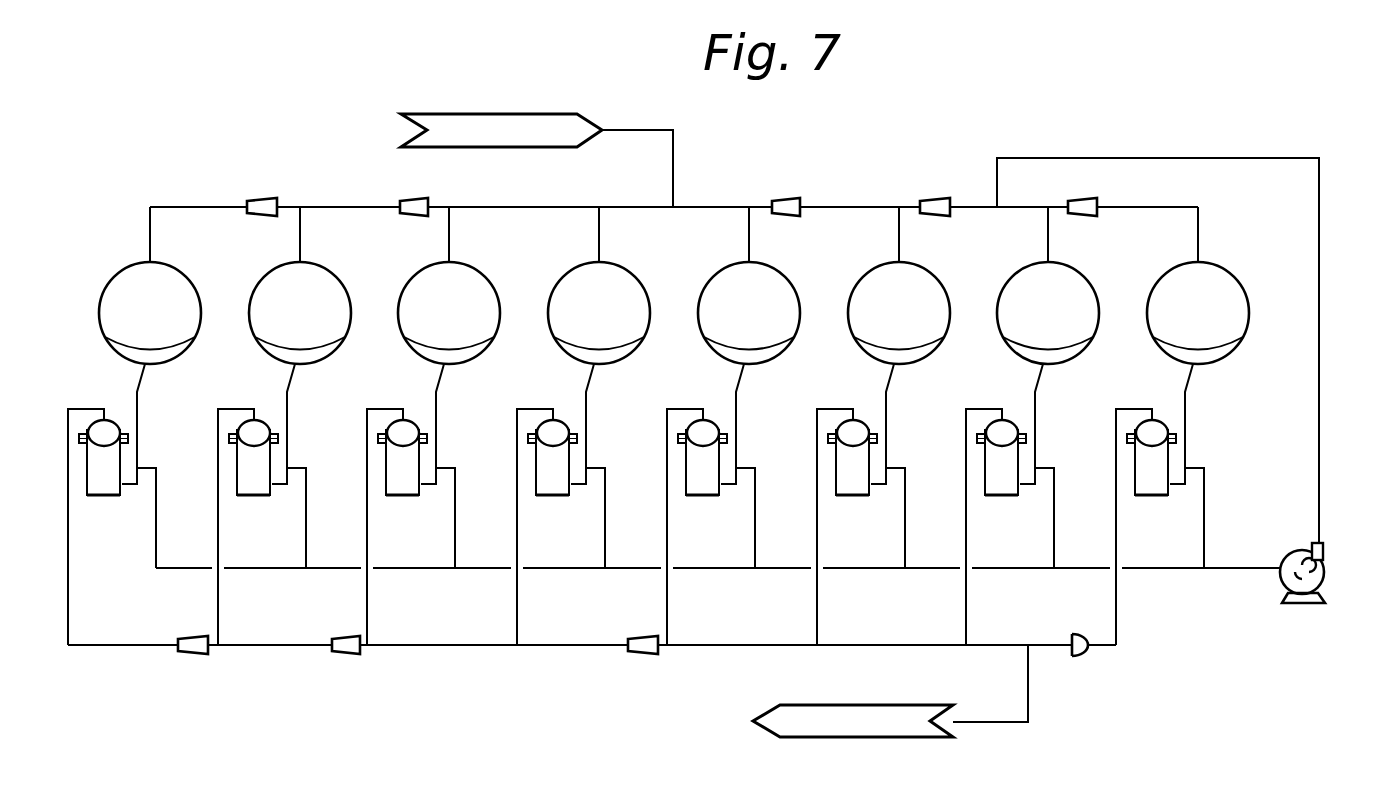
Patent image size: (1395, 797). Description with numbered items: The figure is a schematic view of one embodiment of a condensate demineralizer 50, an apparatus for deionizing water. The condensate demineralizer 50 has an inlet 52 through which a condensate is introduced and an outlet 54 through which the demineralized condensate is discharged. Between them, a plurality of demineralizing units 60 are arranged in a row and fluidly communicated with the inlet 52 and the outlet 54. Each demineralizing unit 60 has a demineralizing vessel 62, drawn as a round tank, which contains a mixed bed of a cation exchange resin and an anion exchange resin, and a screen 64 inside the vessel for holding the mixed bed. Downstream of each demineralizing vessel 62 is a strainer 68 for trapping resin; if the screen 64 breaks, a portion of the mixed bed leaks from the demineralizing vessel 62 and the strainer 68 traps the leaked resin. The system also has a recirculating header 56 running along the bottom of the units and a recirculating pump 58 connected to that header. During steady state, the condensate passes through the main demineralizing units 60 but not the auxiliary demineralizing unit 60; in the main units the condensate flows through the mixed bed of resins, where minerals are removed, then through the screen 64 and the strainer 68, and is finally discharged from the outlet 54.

The condensate demineralizer 50 is at (240, 724).
The inlet 52 is at (497, 114).
The outlet 54 is at (856, 738).
The recirculating header 56 is at (1245, 570).
The recirculating pump 58 is at (1322, 598).
The demineralizing unit 60 is at (93, 275).
The demineralizing vessel 62 is at (100, 302).
The screen 64 is at (115, 347).
The strainer 68 is at (103, 496).